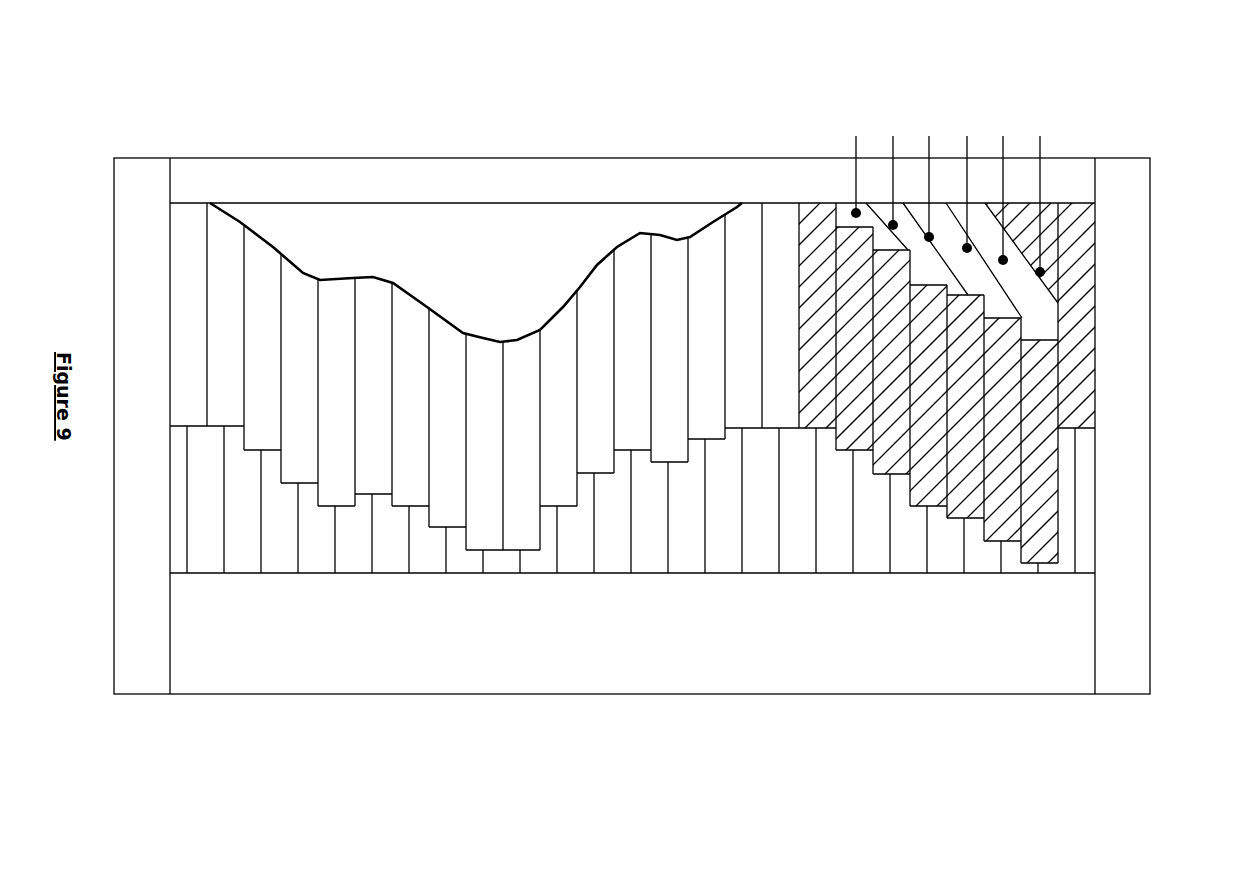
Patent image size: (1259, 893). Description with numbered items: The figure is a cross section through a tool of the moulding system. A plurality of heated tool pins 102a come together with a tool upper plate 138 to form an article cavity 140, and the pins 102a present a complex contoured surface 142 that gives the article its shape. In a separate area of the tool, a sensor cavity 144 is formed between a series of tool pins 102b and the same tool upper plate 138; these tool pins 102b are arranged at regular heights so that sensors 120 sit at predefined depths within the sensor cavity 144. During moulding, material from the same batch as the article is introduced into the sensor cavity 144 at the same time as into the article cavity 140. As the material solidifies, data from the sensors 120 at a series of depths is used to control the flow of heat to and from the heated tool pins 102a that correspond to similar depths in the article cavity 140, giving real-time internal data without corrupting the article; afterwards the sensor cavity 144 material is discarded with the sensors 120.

The tool upper plate 138 is at (680, 178).
The article cavity 140 is at (455, 236).
The complex contoured surface 142 is at (320, 270).
The heated tool pins 102a is at (482, 528).
The tool pins 102b is at (1048, 520).
The sensor cavity 144 is at (1050, 297).
The sensors 120 is at (967, 248).